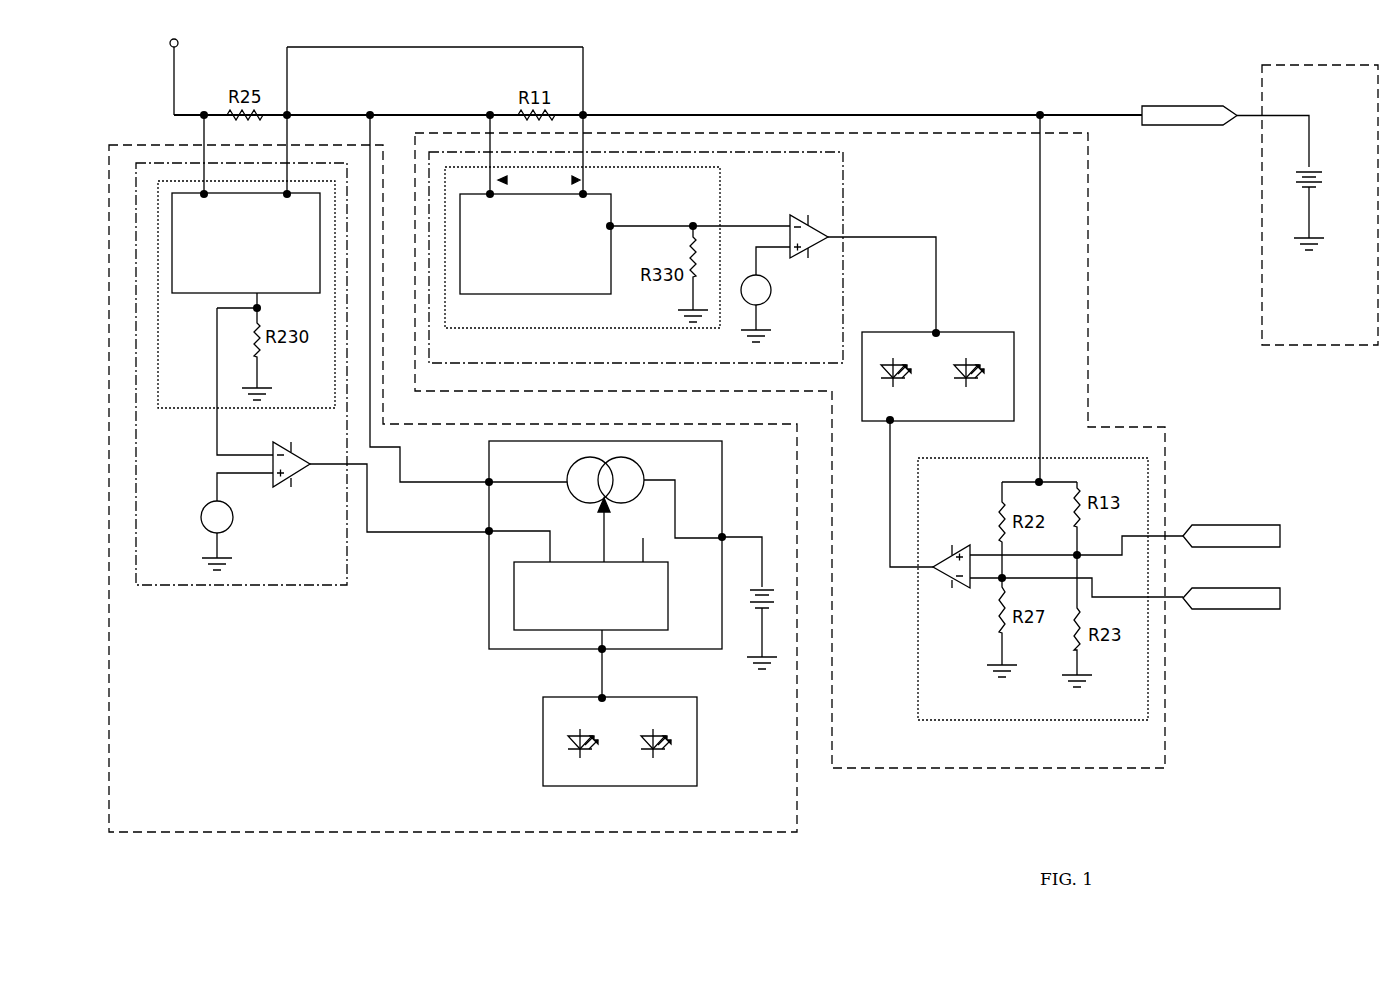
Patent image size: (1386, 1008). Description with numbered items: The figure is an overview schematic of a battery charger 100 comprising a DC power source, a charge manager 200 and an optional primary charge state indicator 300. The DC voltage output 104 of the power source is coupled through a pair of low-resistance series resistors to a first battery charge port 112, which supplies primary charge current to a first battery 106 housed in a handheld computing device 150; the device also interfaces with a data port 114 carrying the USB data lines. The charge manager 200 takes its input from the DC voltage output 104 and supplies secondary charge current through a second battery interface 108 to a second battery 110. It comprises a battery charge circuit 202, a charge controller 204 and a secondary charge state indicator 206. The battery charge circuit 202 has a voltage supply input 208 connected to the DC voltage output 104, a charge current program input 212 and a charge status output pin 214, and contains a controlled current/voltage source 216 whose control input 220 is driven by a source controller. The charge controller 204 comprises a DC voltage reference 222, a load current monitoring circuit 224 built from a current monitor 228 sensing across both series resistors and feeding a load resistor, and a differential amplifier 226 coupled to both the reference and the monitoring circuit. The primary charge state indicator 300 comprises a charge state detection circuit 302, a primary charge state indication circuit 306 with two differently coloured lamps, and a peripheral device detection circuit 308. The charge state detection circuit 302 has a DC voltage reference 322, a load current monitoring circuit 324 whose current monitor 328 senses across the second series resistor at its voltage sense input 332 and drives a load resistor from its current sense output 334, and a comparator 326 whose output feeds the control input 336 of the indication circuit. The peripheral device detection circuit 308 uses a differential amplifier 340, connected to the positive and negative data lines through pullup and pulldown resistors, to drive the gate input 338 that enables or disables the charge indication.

The battery charger 100 is at (890, 842).
The DC voltage output 104 is at (162, 65).
The first battery 106 is at (1330, 202).
The second battery interface 108 is at (742, 549).
The second battery 110 is at (752, 617).
The first battery charge port 112 is at (1178, 127).
The data port 114 is at (1245, 548).
The handheld computing device 150 is at (1262, 268).
The charge manager 200 is at (165, 832).
The battery charge circuit 202 is at (502, 649).
The charge controller 204 is at (183, 585).
The secondary charge state indicator 206 is at (597, 786).
The voltage supply input 208 is at (508, 471).
The charge current program input 212 is at (500, 546).
The charge status output pin 214 is at (579, 664).
The controlled current/voltage source 216 is at (587, 505).
The control input 220 is at (622, 530).
The DC voltage reference 222 is at (237, 521).
The load current monitoring circuit 224 is at (202, 408).
The differential amplifier 226 is at (353, 420).
The current monitor 228 is at (210, 293).
The primary charge state indicator 300 is at (1103, 427).
The charge state detection circuit 302 is at (843, 187).
The primary charge state indication circuit 306 is at (958, 332).
The peripheral device detection circuit 308 is at (918, 690).
The DC voltage reference 322 is at (779, 294).
The load current monitoring circuit 324 is at (720, 207).
The comparator 326 is at (863, 264).
The current monitor 328 is at (552, 294).
The voltage sense input 332 is at (539, 180).
The current sense output 334 is at (700, 214).
The control input 336 is at (914, 321).
The gate input 338 is at (889, 493).
The differential amplifier 340 is at (1058, 557).